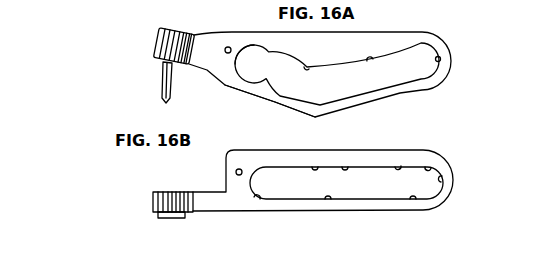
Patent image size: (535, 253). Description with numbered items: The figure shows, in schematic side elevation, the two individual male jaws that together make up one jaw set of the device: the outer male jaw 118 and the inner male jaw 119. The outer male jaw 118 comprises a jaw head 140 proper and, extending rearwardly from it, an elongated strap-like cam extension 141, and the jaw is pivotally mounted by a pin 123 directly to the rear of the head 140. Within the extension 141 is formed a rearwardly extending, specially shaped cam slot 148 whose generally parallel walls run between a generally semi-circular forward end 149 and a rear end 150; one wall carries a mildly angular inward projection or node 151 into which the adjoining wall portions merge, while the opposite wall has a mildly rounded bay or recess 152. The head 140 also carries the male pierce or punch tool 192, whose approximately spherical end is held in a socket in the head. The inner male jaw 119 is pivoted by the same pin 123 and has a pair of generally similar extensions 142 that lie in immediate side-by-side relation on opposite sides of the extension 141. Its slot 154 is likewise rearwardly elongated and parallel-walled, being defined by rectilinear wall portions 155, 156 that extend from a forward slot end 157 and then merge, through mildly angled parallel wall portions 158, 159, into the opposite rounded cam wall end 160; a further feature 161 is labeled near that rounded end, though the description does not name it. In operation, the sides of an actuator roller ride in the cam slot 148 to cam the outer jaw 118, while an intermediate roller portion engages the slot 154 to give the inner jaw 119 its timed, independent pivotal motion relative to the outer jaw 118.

In FIG. 16A, the outer male jaw 118 is at (207, 71).
In FIG. 16B, the inner male jaw 119 is at (181, 191).
In FIG. 16A, the pin 123 is at (231, 49).
In FIG. 16B, the pin 123 is at (242, 174).
In FIG. 16A, the jaw head 140 is at (157, 56).
In FIG. 16A, the cam extension 141 is at (250, 93).
In FIG. 16B, the extensions 142 is at (287, 135).
In FIG. 16A, the cam slot 148 is at (370, 60).
In FIG. 16A, the forward end 149 is at (236, 64).
In FIG. 16A, the rear end 150 is at (441, 59).
In FIG. 16A, the node 151 is at (307, 69).
In FIG. 16A, the recess 152 is at (322, 103).
In FIG. 16B, the slot 154 is at (346, 166).
In FIG. 16B, the rectilinear wall portion 155 is at (315, 166).
In FIG. 16B, the rectilinear wall portion 156 is at (328, 199).
In FIG. 16B, the forward slot end 157 is at (257, 200).
In FIG. 16B, the angled wall portion 158 is at (399, 165).
In FIG. 16B, the angled wall portion 159 is at (413, 199).
In FIG. 16B, the rounded cam wall end 160 is at (443, 179).
In FIG. 16B, the notch 161 is at (429, 166).
In FIG. 16A, the male pierce tool 192 is at (162, 88).